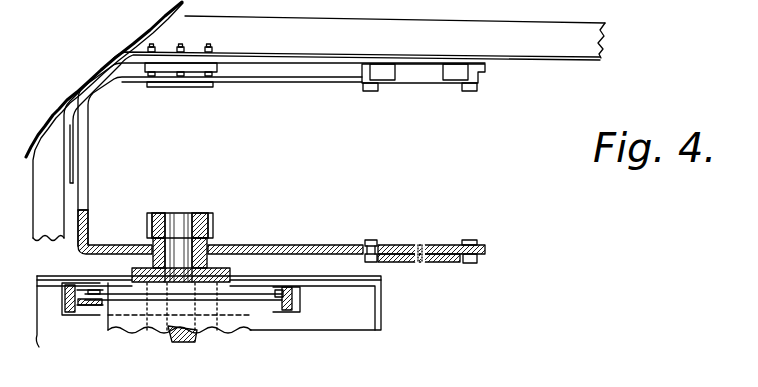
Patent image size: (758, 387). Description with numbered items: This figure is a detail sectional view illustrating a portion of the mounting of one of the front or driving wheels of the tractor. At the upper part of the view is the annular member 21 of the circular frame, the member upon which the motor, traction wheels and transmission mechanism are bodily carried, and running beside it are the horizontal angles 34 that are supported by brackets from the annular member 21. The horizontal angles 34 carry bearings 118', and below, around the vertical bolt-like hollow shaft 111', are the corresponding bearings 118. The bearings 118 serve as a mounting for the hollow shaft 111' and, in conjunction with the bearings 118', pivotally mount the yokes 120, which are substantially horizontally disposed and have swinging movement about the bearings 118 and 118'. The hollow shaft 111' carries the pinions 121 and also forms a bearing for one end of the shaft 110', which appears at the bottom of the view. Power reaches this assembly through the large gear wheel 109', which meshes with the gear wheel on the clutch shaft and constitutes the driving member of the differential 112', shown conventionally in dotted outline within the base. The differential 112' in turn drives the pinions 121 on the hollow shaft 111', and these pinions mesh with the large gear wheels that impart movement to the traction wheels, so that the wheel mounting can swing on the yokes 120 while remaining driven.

The annular member 21 is at (64, 99).
The horizontal angles 34 is at (334, 127).
The bearings 118' is at (315, 91).
The bearings 118 is at (281, 158).
The yokes 120 is at (341, 247).
The pinions 121 is at (214, 226).
The hollow shaft 111' is at (191, 227).
The large gear wheel 109' is at (208, 311).
The differential 112' is at (155, 328).
The shaft 110' is at (158, 350).